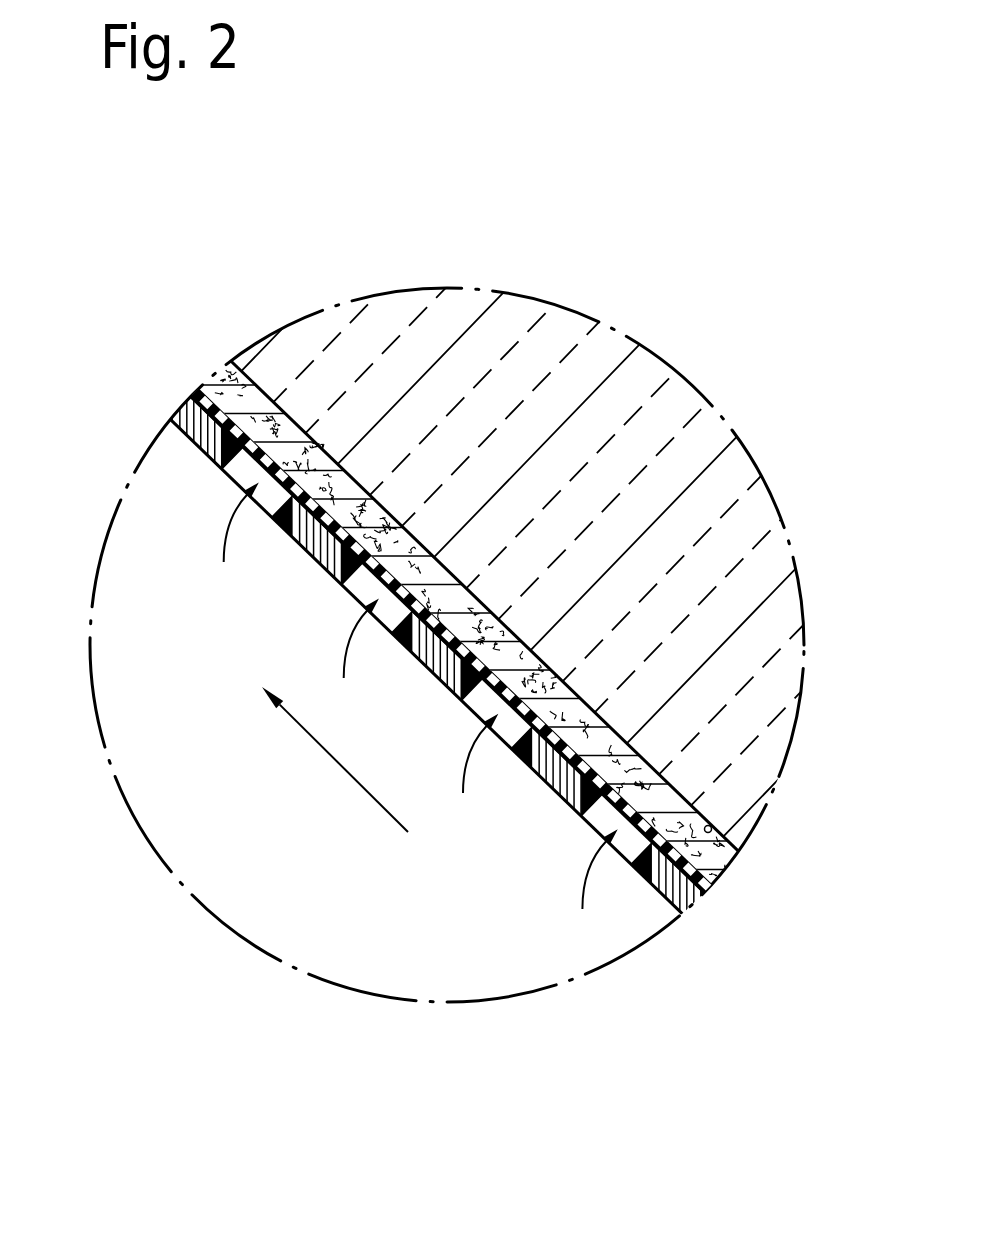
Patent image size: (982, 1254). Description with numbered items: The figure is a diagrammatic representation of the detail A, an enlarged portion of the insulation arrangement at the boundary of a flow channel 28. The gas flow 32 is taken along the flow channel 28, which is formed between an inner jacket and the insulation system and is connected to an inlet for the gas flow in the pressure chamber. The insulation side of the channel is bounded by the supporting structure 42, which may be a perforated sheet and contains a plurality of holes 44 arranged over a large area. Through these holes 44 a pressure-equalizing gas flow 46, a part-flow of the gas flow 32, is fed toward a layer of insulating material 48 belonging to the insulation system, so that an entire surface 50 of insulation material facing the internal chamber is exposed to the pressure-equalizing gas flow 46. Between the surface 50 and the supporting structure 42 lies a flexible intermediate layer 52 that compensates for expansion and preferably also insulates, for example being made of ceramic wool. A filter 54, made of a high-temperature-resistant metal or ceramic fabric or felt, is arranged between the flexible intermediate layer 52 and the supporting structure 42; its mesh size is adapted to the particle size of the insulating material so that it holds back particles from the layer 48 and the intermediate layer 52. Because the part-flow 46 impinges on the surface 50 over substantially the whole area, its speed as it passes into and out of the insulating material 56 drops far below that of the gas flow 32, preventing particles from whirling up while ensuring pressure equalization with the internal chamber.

The flow channel 28 is at (420, 975).
The gas flow 32 is at (375, 798).
The supporting structure 42 is at (175, 437).
The holes 44 is at (243, 473).
The pressure-equalizing gas flow 46 is at (578, 887).
The layer of insulating material 48 is at (400, 286).
The surface of insulation material 50 is at (712, 826).
The flexible intermediate layer 52 is at (247, 390).
The filter 54 is at (203, 393).
The insulating material 56 is at (560, 348).
The detail A is at (667, 360).